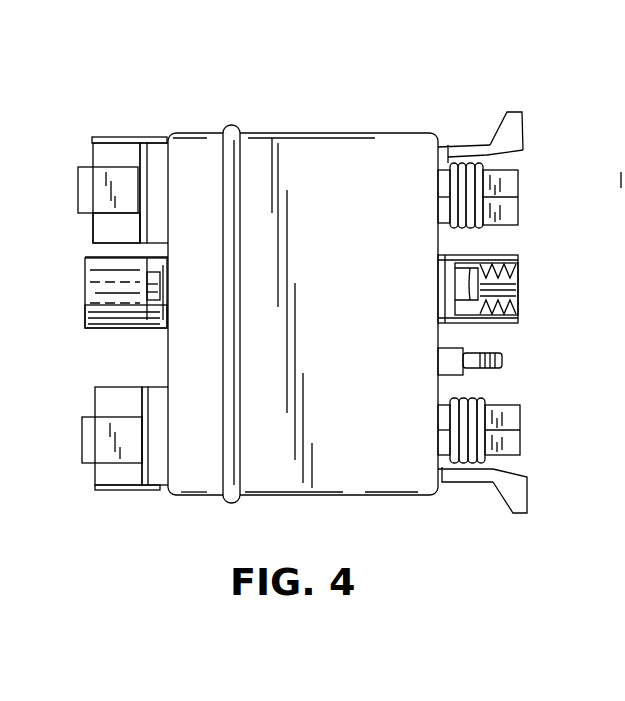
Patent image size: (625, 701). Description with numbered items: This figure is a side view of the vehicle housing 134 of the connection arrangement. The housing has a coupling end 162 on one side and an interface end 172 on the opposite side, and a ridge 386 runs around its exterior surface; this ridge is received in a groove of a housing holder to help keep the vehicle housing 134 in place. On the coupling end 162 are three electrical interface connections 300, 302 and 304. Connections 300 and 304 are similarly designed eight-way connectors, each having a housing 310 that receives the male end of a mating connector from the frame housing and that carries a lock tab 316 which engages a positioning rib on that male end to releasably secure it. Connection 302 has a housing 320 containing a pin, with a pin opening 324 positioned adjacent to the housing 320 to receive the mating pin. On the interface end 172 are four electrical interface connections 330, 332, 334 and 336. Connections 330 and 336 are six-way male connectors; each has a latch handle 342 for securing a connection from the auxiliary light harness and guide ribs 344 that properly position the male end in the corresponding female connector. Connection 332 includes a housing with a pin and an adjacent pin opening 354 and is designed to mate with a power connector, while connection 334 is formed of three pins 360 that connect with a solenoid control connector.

The vehicle housing 134 is at (308, 142).
The coupling end 162 is at (165, 158).
The interface end 172 is at (440, 143).
The electrical interface connection 300 is at (77, 176).
The electrical interface connection 302 is at (84, 320).
The electrical interface connection 304 is at (91, 465).
The housing 310 is at (93, 225).
The lock tab 316 is at (107, 138).
The housing 320 is at (107, 331).
The pin opening 324 is at (92, 293).
The electrical interface connection 330 is at (521, 169).
The electrical interface connection 332 is at (528, 248).
The electrical interface connection 334 is at (506, 362).
The electrical interface connection 336 is at (523, 442).
The latch handle 342 is at (512, 112).
The guide ribs 344 is at (440, 197).
The pin opening 354 is at (512, 288).
The pins 360 is at (502, 358).
The ridge 386 is at (228, 125).